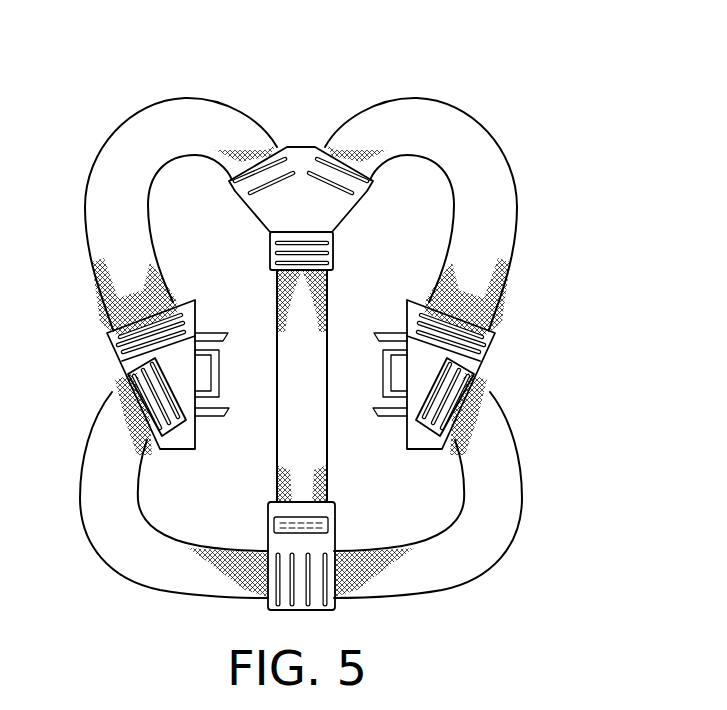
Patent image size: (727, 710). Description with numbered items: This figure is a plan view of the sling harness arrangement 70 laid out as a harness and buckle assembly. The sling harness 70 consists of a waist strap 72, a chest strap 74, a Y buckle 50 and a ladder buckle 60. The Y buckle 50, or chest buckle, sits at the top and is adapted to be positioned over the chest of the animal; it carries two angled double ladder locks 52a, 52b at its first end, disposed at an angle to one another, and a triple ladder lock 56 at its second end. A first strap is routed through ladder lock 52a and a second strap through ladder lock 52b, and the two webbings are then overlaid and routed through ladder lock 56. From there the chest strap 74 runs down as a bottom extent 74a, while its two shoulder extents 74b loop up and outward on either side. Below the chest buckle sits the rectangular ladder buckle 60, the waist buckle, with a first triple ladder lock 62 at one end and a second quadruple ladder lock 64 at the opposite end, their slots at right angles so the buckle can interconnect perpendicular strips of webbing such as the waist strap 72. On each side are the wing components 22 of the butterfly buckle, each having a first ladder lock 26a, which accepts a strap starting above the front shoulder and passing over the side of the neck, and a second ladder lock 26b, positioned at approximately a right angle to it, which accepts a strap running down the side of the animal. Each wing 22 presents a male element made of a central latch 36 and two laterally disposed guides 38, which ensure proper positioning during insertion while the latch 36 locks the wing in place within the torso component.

The sling harness arrangement 70 is at (343, 324).
The chest strap 74 is at (297, 256).
The bottom extent 74a is at (312, 470).
The shoulder extents 74b is at (148, 126).
The waist strap 72 is at (490, 540).
The Y buckle 50 is at (314, 153).
The double ladder lock 52a is at (241, 177).
The double ladder lock 52b is at (355, 198).
The triple ladder lock 56 is at (333, 250).
The wing components 22 is at (313, 369).
The first ladder lock 26a is at (138, 330).
The second ladder lock 26b is at (150, 405).
The central latch 36 is at (221, 373).
The guides 38 is at (216, 333).
The ladder buckle 60 is at (298, 566).
The first triple ladder lock 62 is at (275, 527).
The second quadruple ladder lock 64 is at (268, 605).